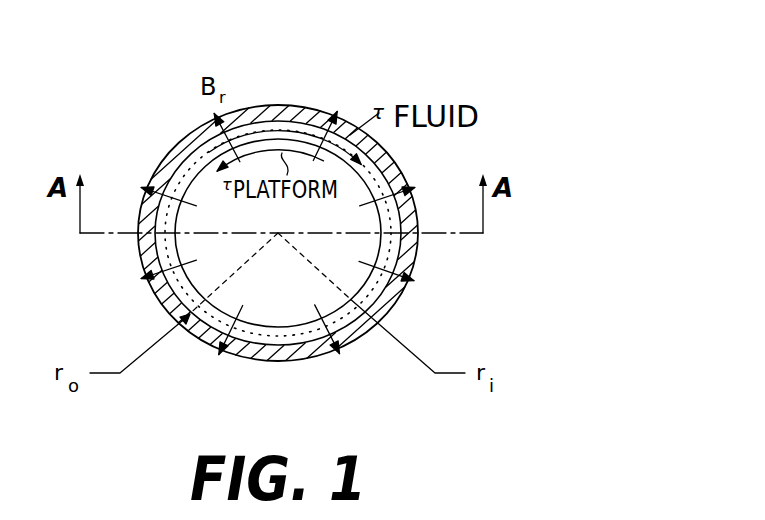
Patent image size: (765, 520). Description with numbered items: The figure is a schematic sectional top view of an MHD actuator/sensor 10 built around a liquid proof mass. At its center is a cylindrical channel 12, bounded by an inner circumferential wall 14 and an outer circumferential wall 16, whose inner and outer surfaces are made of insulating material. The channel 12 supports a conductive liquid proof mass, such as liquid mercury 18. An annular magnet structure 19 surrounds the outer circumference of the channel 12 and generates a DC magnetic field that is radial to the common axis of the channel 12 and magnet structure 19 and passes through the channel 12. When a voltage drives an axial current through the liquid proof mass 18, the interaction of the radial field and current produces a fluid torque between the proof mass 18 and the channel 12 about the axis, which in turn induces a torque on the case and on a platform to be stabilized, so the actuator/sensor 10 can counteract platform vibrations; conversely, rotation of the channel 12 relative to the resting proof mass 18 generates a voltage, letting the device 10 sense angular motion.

The MHD actuator/sensor 10 is at (403, 70).
The cylindrical channel 12 is at (177, 219).
The inner circumferential wall 14 is at (381, 239).
The outer circumferential wall 16 is at (388, 217).
The liquid mercury proof mass 18 is at (177, 156).
The annular magnet structure 19 is at (273, 107).